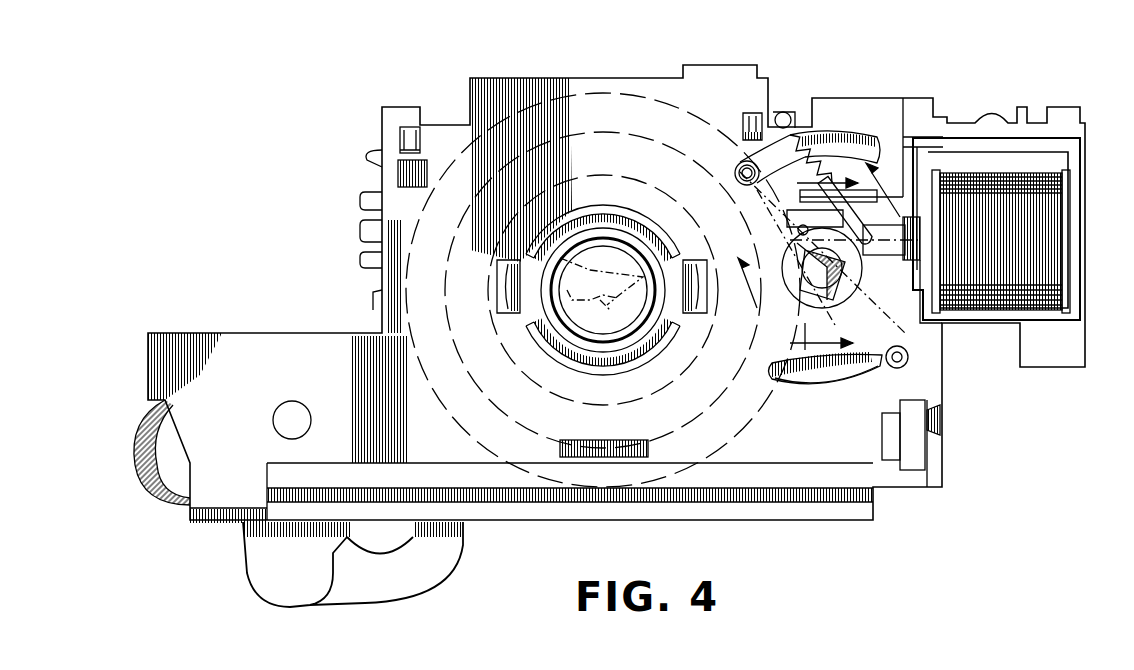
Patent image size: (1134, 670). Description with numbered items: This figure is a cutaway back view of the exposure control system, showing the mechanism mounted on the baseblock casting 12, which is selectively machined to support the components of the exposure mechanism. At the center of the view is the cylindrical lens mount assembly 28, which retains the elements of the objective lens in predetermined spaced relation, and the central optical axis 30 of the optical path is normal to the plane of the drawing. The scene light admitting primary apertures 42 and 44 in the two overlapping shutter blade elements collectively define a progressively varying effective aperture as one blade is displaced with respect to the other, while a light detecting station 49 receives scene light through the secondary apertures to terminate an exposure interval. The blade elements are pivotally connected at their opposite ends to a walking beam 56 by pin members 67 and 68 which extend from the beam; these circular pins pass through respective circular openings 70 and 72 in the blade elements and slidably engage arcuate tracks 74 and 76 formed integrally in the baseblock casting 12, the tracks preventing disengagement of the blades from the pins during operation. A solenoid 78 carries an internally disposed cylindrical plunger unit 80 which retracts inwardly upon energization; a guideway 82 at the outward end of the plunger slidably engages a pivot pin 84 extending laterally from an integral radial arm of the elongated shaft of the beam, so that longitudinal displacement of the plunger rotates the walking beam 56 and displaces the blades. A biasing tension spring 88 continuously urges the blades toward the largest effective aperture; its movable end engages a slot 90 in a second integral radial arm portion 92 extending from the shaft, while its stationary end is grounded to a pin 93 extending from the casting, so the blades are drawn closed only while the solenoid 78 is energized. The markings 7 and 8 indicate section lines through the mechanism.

The baseblock casting 12 is at (940, 372).
The cylindrical lens mount assembly 28 is at (538, 198).
The central optical axis 30 is at (601, 290).
The scene light admitting primary aperture 42 is at (633, 260).
The scene light admitting primary aperture 44 is at (578, 315).
The light detecting station 49 is at (282, 431).
The walking beam 56 is at (847, 328).
The pin member 67 is at (745, 168).
The pin member 68 is at (898, 352).
The circular opening 70 is at (757, 172).
The circular opening 72 is at (826, 370).
The arcuate track 74 is at (858, 137).
The arcuate track 76 is at (805, 388).
The solenoid 78 is at (1035, 170).
The plunger unit 80 is at (893, 258).
The guideway 82 is at (800, 272).
The pivot pin 84 is at (795, 246).
The biasing tension spring 88 is at (820, 158).
The slot 90 is at (848, 290).
The second integral radial arm portion 92 is at (866, 165).
The pin 93 is at (788, 112).
The section line 7- 7 is at (808, 235).
The section line 8- 8 is at (824, 264).